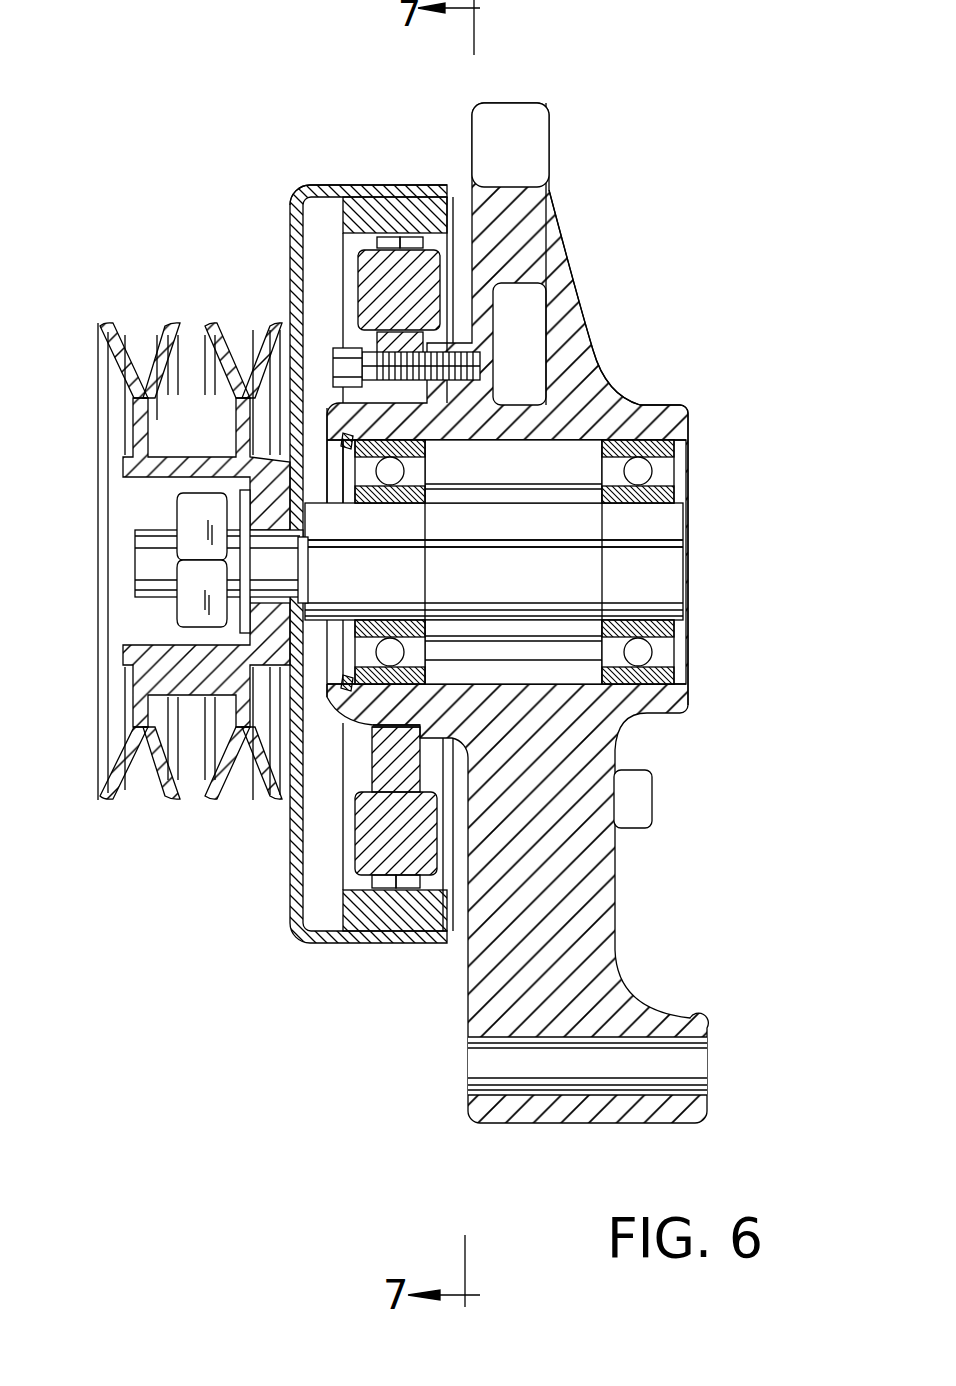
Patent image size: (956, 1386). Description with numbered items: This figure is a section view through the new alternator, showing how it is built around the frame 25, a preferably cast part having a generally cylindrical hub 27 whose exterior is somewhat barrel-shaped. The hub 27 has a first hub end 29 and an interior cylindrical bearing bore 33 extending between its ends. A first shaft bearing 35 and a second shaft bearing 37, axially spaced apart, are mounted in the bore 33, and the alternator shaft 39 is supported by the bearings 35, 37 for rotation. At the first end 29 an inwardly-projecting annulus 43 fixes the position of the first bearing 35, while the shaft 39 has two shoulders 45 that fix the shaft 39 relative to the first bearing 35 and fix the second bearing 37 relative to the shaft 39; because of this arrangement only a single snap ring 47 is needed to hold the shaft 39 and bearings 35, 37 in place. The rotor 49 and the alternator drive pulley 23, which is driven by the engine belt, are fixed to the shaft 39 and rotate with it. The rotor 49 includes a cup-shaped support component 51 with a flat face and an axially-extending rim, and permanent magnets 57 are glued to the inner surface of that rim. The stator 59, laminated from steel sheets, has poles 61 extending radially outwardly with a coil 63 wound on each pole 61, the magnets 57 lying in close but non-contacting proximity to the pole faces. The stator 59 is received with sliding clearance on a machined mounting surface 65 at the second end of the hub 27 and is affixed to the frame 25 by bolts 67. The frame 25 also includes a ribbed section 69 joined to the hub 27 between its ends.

The alternator drive pulley 23 is at (208, 323).
The frame 25 is at (467, 1005).
The hub 27 is at (562, 405).
The first hub end 29 is at (690, 405).
The bearing bore 33 is at (507, 667).
The first shaft bearing 35 is at (435, 520).
The second shaft bearing 37 is at (427, 450).
The alternator shaft 39 is at (683, 575).
The inwardly-projecting annulus 43 is at (688, 445).
The shoulders 45 is at (423, 495).
The snap ring 47 is at (347, 684).
The rotor 49 is at (276, 194).
The cup-shaped support component 51 is at (295, 905).
The permanent magnets 57 is at (362, 918).
The stator 59 is at (408, 775).
The poles 61 is at (400, 878).
The coil 63 is at (423, 843).
The mounting surface 65 is at (405, 727).
The bolts 67 is at (490, 353).
The ribbed section 69 is at (552, 300).